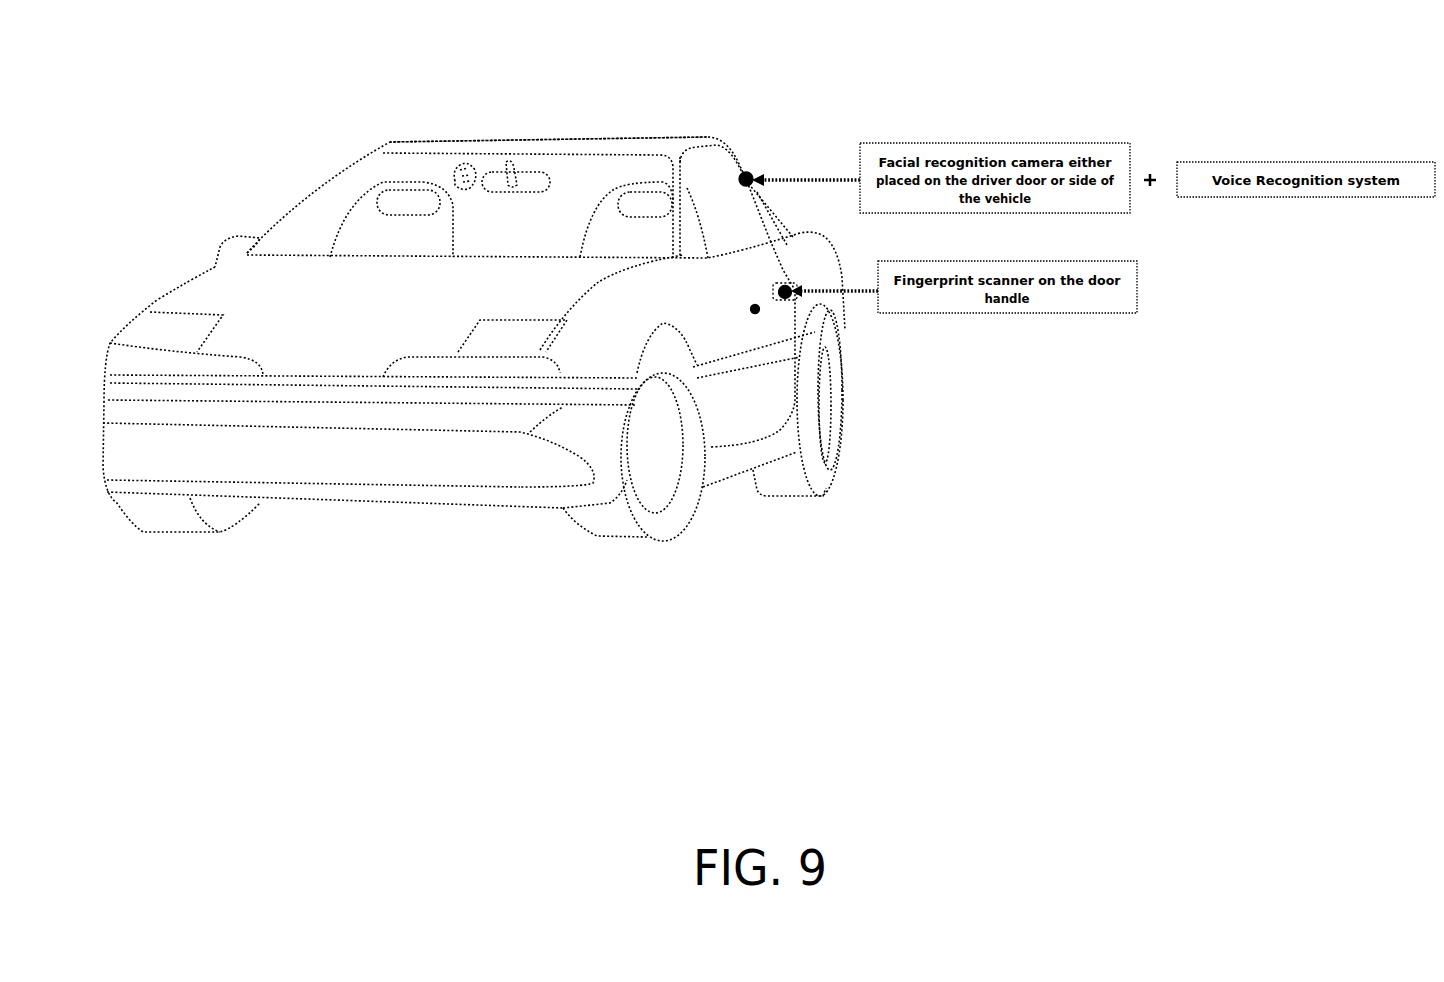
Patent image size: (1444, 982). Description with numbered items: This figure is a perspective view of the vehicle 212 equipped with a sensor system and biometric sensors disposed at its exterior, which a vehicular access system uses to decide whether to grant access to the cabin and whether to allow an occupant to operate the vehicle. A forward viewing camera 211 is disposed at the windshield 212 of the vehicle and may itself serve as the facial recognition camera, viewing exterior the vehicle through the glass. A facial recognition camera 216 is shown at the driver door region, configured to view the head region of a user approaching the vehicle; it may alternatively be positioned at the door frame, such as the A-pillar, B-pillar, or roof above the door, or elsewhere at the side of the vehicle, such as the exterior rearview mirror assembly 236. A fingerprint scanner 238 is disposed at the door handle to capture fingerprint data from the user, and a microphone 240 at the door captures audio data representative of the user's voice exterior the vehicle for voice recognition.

The forward viewing camera 211 is at (478, 172).
The vehicle 212 is at (393, 147).
The facial recognition camera 216 is at (751, 174).
The exterior rearview mirror assembly 236 is at (219, 247).
The fingerprint scanner 238 is at (790, 297).
The microphone 240 is at (758, 312).